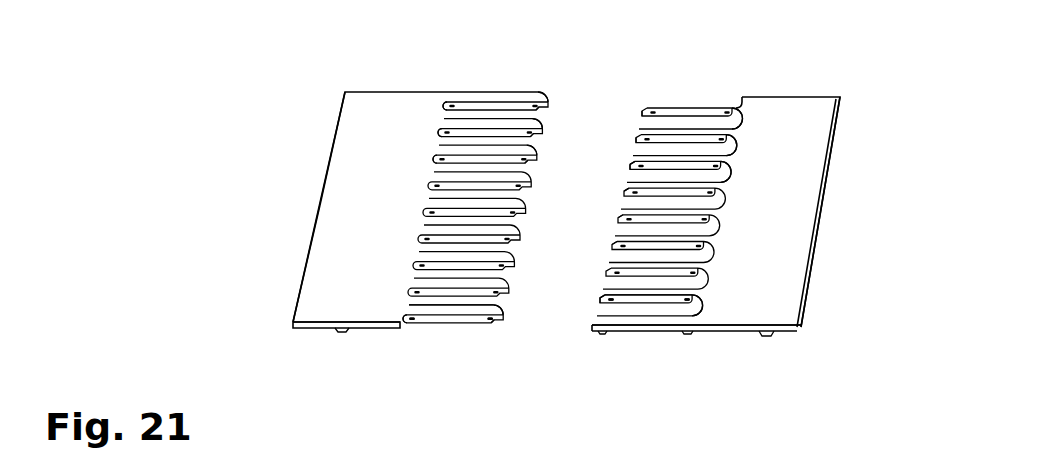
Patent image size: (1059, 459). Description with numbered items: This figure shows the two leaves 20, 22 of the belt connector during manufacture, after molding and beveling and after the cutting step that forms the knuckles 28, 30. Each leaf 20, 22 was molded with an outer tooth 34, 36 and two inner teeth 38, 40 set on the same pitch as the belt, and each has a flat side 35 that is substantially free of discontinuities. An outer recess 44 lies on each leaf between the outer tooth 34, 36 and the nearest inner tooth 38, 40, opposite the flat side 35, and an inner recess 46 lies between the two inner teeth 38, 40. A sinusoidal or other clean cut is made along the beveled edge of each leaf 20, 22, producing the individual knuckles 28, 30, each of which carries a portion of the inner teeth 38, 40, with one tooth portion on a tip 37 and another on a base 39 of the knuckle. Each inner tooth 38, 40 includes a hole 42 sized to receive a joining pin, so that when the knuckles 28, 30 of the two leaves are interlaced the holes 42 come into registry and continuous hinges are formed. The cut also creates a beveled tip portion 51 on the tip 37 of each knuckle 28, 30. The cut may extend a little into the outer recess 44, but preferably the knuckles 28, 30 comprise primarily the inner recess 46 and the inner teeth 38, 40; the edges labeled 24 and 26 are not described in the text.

The leaf 20 is at (343, 190).
The leaf 22 is at (781, 204).
The first plate outer edge 24 is at (340, 113).
The second plate outer edge 26 is at (840, 127).
The knuckle 28 is at (467, 182).
The knuckle 30 is at (680, 185).
The outer tooth 34 is at (338, 332).
The flat side 35 is at (333, 243).
The outer tooth 36 is at (767, 337).
The tip 37 is at (518, 182).
The inner tooth 38 is at (407, 323).
The base 39 is at (436, 178).
The inner tooth 40 is at (490, 330).
The hole 42 is at (407, 323).
The outer recess 44 is at (368, 332).
The inner recess 46 is at (457, 323).
The beveled tip portion 51 is at (540, 155).